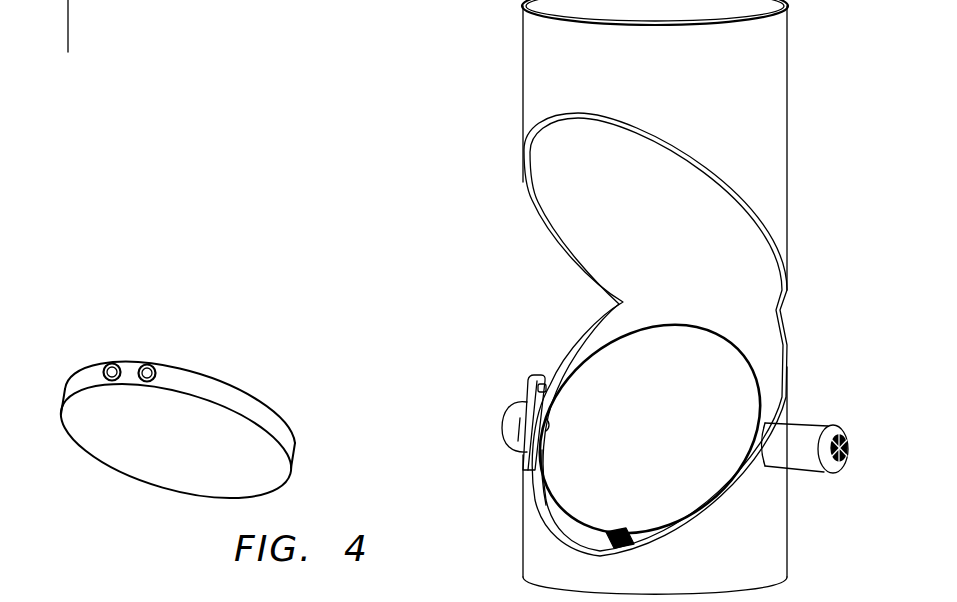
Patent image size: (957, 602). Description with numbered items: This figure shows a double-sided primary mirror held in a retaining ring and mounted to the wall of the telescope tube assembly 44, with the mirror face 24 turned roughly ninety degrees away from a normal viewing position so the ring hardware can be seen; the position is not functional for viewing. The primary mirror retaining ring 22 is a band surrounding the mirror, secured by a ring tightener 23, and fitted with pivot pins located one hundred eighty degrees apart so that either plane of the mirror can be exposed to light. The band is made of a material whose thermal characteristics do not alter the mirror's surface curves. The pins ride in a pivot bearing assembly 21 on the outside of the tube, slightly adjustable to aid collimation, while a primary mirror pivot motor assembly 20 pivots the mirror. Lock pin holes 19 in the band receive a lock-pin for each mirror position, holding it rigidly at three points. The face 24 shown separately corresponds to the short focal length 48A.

The short focal length 48A is at (76, 32).
The lock pin holes 19 is at (111, 352).
The primary mirror pivot motor assembly 20 is at (800, 423).
The pivot bearing assembly 21 is at (508, 403).
The primary mirror retaining ring 22 is at (550, 497).
The ring tightener 23 is at (620, 550).
The primary mirror face 24 is at (155, 452).
The telescope tube assembly 44 is at (578, 338).